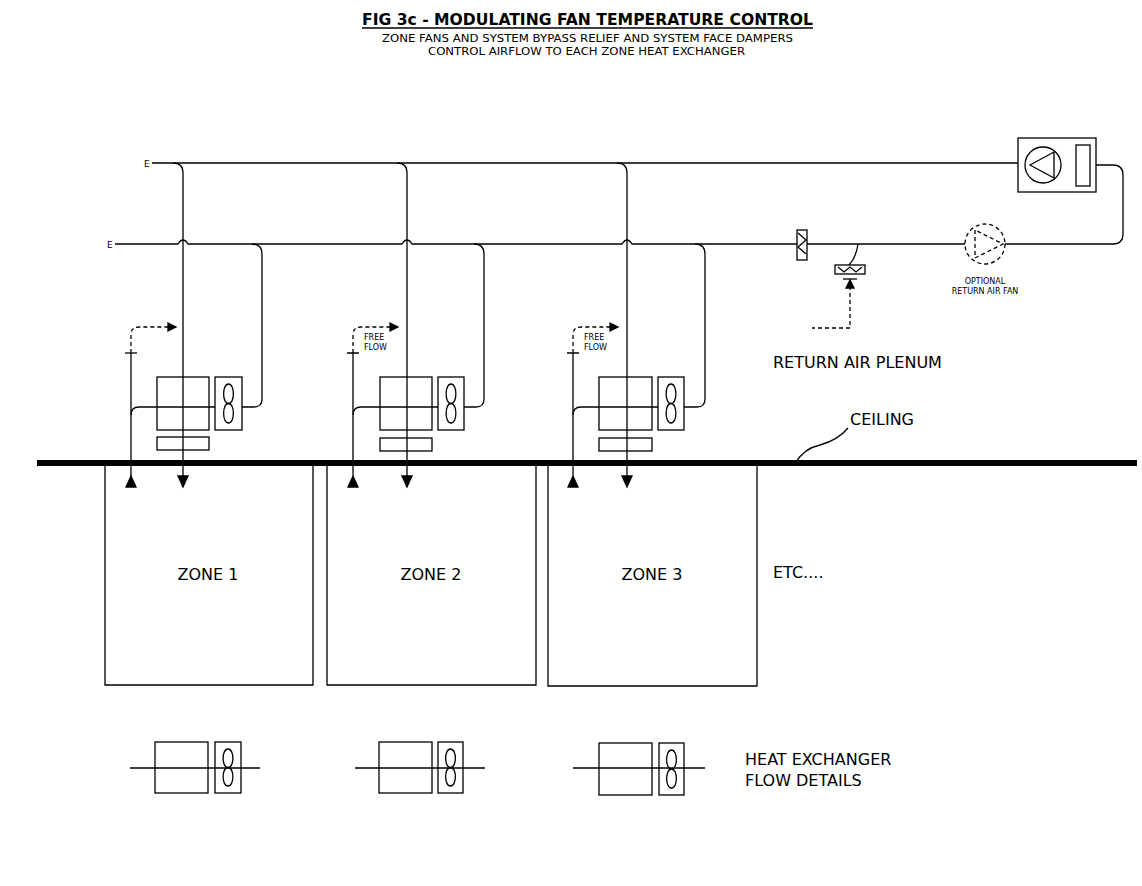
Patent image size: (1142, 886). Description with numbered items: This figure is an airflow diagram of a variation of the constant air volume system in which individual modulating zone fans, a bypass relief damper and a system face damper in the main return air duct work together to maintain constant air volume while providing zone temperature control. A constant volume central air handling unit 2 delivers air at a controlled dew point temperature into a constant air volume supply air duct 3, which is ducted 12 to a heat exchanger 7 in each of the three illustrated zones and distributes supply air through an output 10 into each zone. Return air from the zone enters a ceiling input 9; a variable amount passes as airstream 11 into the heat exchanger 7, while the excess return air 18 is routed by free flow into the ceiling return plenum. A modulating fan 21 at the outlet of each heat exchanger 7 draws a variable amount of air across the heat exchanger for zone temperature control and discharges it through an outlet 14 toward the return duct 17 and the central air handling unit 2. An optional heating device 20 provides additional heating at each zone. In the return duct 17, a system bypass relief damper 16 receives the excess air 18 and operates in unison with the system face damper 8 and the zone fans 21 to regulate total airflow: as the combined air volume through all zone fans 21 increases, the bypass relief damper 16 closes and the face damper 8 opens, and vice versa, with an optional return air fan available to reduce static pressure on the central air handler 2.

The central air handling unit 2 is at (1083, 192).
The supply air duct 3 is at (666, 163).
The heat exchanger 7 is at (210, 377).
The system face damper 8 is at (803, 260).
The ceiling input 9 is at (133, 490).
The output 10 is at (185, 490).
The airstream 11 is at (139, 406).
The ducting 12 is at (184, 225).
The outlet 14 is at (262, 290).
The system bypass relief damper 16 is at (838, 275).
The return duct 17 is at (733, 244).
The excess return air 18 is at (128, 342).
The heating device 20 is at (209, 443).
The modulating fan 21 is at (232, 377).